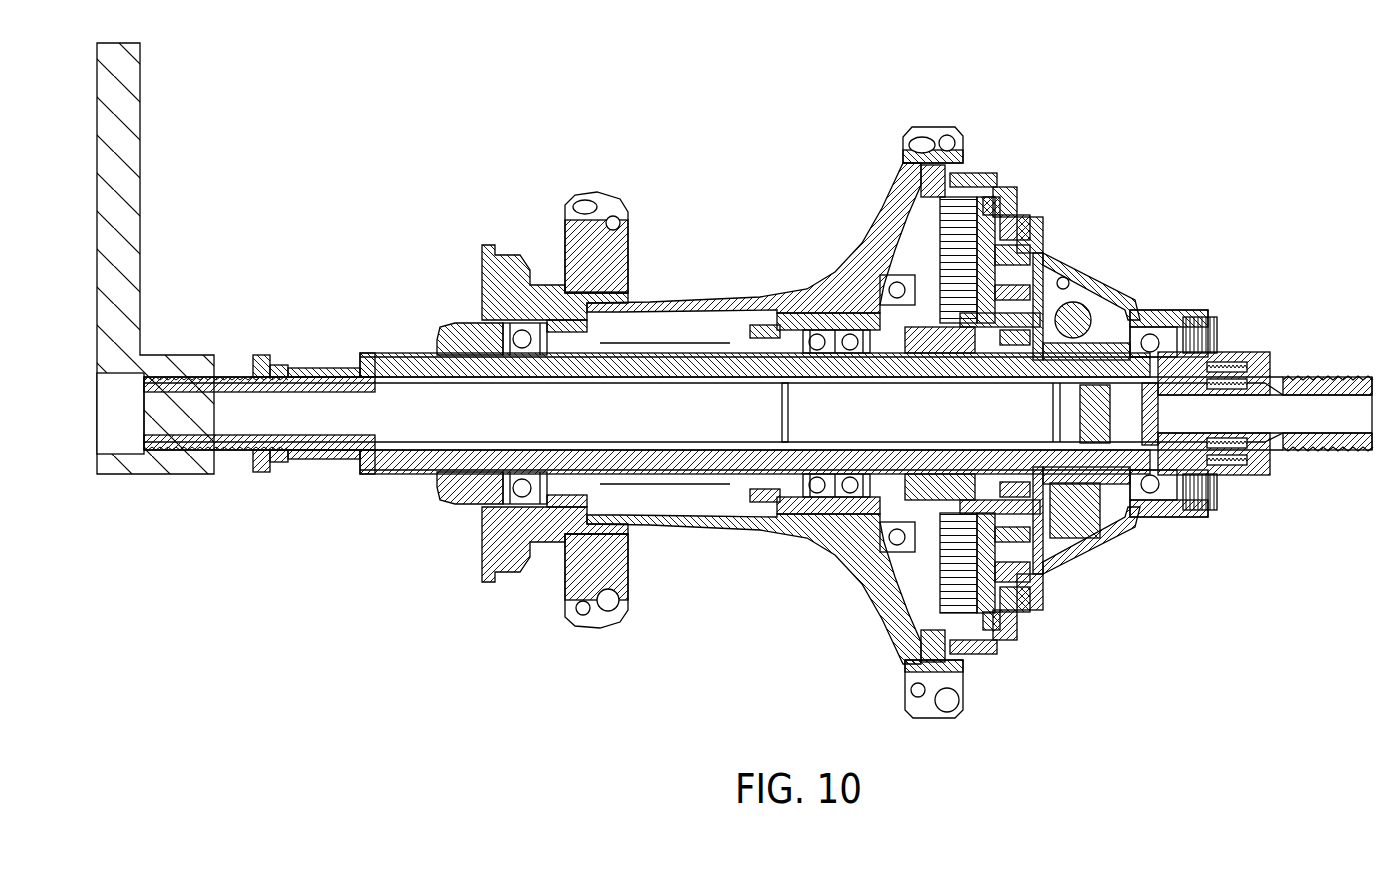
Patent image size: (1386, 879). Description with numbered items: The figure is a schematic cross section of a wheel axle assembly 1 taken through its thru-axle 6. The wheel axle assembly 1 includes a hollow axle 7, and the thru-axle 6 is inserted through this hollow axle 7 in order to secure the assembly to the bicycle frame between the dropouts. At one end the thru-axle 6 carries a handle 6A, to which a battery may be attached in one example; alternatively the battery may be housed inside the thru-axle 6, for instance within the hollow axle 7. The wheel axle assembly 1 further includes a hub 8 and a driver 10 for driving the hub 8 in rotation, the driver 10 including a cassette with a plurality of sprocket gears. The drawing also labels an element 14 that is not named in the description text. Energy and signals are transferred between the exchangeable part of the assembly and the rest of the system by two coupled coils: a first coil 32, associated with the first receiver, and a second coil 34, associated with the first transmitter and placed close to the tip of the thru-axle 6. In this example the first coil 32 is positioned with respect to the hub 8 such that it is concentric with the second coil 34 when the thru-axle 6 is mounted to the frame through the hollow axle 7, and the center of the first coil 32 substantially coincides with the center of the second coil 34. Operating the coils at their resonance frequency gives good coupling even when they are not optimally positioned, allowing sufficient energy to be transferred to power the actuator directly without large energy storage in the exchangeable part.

The wheel axle assembly 1 is at (1294, 153).
The thru-axle 6 is at (1280, 378).
The handle 6A is at (125, 173).
The hollow axle 7 is at (405, 460).
The hub 8 is at (810, 300).
The driver 10 is at (1135, 292).
The motor gear unit 14 is at (963, 253).
The first coil 32 is at (1232, 362).
The second coil 34 is at (1240, 466).